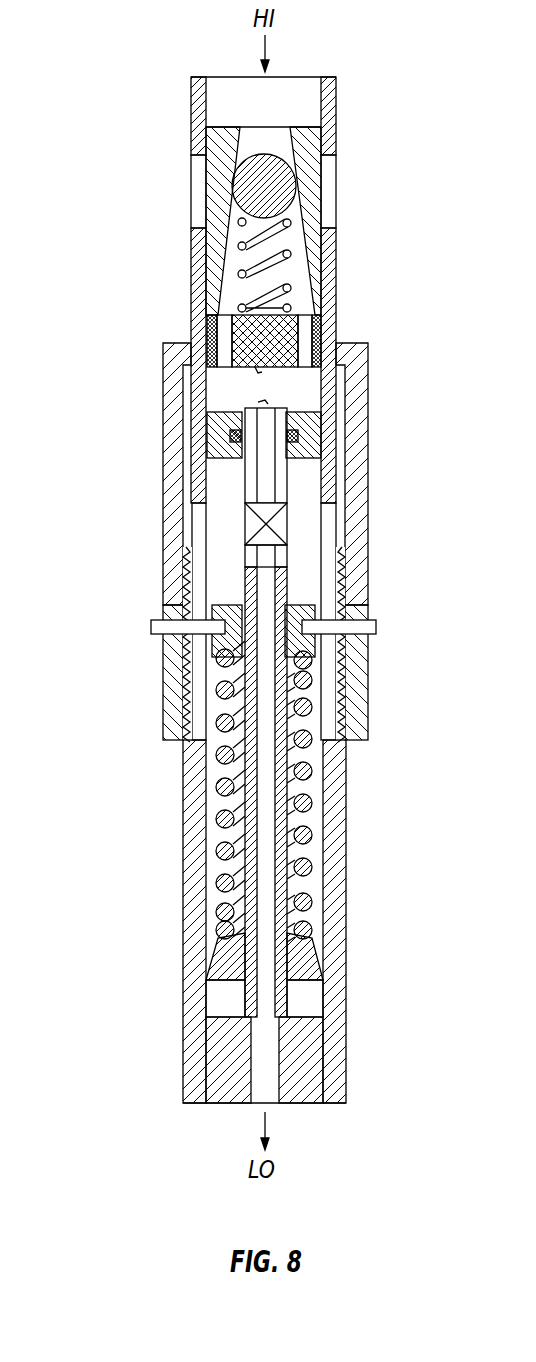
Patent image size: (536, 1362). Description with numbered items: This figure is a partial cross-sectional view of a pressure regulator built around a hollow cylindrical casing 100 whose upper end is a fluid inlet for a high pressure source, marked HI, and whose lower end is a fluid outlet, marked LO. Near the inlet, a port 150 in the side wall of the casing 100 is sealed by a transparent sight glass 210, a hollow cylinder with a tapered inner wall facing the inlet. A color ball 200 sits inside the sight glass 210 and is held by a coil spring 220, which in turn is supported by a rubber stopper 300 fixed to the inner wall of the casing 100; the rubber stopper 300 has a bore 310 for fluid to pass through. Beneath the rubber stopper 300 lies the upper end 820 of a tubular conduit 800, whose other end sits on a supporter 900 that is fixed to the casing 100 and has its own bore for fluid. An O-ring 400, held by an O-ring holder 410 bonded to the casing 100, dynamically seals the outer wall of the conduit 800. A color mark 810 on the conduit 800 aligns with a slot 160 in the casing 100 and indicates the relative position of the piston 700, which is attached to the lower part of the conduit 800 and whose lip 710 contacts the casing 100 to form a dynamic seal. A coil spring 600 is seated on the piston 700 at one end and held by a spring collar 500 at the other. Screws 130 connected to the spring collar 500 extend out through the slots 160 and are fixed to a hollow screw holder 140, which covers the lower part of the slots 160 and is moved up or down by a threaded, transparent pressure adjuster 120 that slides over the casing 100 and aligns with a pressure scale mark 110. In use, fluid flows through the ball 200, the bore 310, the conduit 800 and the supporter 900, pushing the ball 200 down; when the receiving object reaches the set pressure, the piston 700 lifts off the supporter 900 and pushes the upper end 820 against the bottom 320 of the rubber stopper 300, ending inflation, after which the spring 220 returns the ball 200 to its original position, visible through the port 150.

The hollow cylindrical casing 100 is at (535, 83).
The pressure scale mark 110 is at (535, 253).
The pressure adjuster 120 is at (535, 349).
The screw 130 is at (535, 618).
The screw holder 140 is at (535, 696).
The port 150 is at (193, 165).
The slot 160 is at (535, 561).
The ball 200 is at (535, 158).
The sight glass 210 is at (222, 212).
The coil spring 220 is at (240, 263).
The rubber stopper 300 is at (290, 342).
The bore 310 is at (220, 345).
The bottom of the rubber stopper 320 is at (220, 360).
The O-ring 400 is at (307, 443).
The O-ring holder 410 is at (213, 447).
The spring collar 500 is at (208, 612).
The coil spring 600 is at (308, 772).
The piston 700 is at (312, 956).
The lip 710 is at (207, 982).
The tubular conduit 800 is at (278, 998).
The color mark 810 is at (535, 493).
The upper end of the tubular conduit 820 is at (258, 400).
The supporter 900 is at (307, 1072).